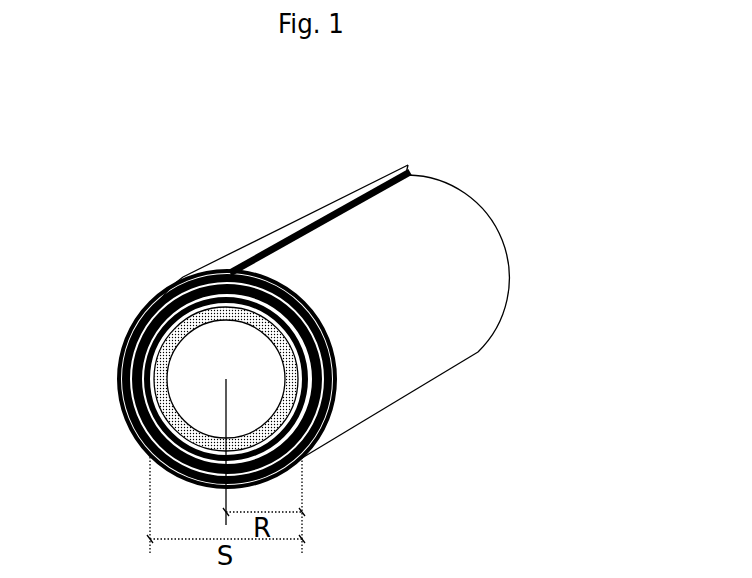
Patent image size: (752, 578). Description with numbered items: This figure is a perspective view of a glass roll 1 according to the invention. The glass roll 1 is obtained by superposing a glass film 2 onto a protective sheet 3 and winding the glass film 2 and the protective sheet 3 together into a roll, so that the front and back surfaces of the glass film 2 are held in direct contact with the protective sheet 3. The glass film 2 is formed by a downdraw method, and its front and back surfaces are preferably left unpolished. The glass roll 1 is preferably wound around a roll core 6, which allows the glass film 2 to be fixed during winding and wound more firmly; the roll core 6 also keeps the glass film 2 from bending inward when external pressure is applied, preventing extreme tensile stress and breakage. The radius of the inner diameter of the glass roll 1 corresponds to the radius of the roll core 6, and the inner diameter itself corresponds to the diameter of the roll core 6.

The glass roll 1 is at (498, 155).
The glass film 2 is at (340, 200).
The protective sheet 3 is at (447, 290).
The roll core 6 is at (175, 282).